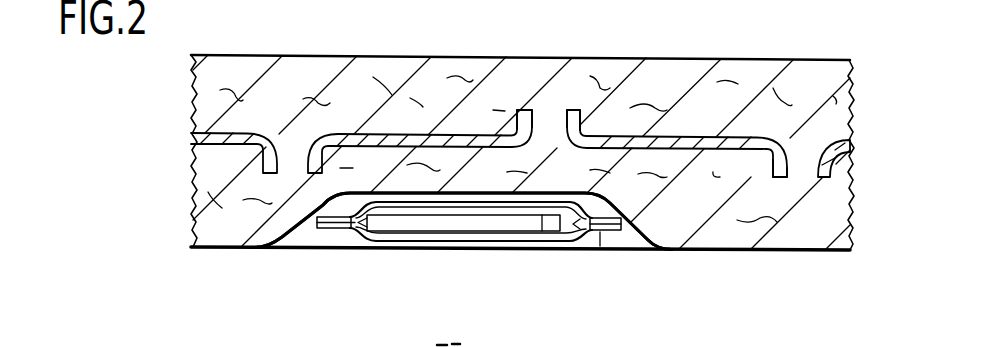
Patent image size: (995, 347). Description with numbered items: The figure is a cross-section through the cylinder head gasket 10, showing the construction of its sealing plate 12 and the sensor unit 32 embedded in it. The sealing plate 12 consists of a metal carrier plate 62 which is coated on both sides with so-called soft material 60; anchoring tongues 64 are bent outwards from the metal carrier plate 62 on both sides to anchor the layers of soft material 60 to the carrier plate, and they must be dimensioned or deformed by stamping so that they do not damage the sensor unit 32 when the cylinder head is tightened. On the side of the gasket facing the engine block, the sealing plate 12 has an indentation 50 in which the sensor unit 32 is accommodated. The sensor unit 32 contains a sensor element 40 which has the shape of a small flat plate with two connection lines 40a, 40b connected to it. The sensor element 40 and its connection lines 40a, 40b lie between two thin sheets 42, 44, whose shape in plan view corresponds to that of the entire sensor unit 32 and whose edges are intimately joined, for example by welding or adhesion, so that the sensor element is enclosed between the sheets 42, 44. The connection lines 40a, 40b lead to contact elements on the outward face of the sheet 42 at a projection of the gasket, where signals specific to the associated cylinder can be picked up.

The cylinder head gasket 10 is at (191, 226).
The sealing plate 12 is at (318, 78).
The sensor unit 32 is at (608, 240).
The sensor element 40 is at (461, 222).
The connection line 40a is at (394, 240).
The connection line 40b is at (557, 248).
The sheet 42 is at (495, 210).
The sheet 44 is at (605, 254).
The indentation 50 is at (300, 237).
The soft material 60 is at (688, 97).
The metal carrier plate 62 is at (430, 134).
The anchoring tongue 64 is at (527, 112).